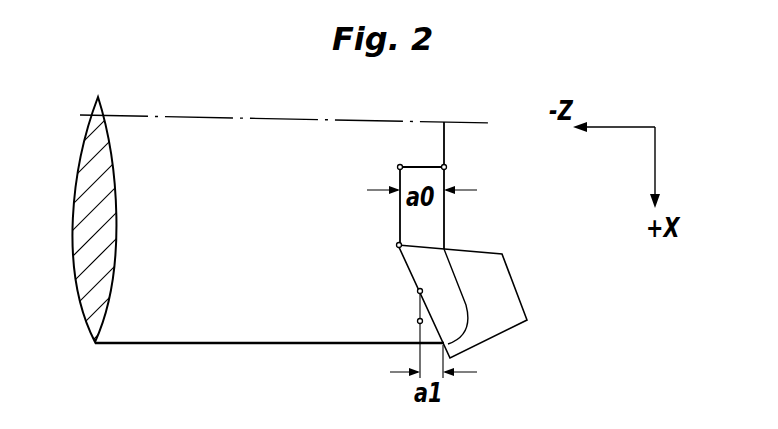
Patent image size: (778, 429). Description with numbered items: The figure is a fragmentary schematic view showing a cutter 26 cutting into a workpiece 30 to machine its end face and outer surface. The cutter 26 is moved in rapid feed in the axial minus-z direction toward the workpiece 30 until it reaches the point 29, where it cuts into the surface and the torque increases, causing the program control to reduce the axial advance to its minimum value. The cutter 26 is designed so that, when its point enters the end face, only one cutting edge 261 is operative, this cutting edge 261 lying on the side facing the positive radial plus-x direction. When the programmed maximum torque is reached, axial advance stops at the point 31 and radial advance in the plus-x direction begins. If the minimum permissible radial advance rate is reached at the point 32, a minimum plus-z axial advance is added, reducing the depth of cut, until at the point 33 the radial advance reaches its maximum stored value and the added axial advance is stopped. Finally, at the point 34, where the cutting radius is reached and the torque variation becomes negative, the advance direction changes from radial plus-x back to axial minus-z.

The cutter 26 is at (508, 293).
The cutting edge 261 is at (408, 272).
The point 29 is at (446, 166).
The workpiece 30 is at (208, 345).
The point 31 is at (400, 167).
The point 32 is at (397, 245).
The point 33 is at (418, 292).
The point 34 is at (418, 321).